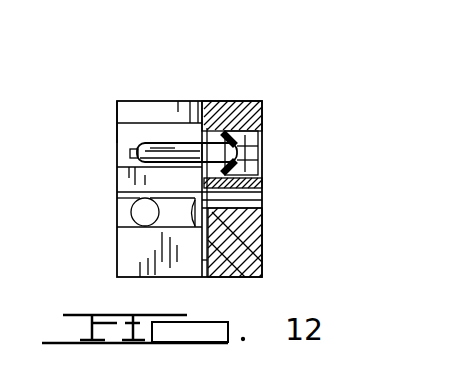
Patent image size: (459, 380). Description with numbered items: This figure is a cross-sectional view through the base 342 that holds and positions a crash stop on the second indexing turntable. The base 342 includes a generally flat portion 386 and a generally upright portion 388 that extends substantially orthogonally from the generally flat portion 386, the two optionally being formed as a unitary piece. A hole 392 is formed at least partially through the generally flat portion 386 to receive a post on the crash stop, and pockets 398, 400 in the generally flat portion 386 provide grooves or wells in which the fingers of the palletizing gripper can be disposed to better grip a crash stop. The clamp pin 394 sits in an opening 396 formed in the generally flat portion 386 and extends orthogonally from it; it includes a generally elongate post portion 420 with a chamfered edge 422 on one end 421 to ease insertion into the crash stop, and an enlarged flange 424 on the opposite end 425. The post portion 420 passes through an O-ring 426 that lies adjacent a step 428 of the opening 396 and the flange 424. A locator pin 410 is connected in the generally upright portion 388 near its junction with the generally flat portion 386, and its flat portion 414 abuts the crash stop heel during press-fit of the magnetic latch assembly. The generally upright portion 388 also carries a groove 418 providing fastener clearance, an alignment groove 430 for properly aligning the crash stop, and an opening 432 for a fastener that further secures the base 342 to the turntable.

The base 342 is at (252, 100).
The generally flat portion 386 is at (189, 128).
The generally upright portion 388 is at (127, 110).
The hole 392 is at (263, 200).
The clamp pin 394 is at (158, 146).
The opening 396 is at (262, 130).
The pocket 398 is at (203, 118).
The pocket 400 is at (207, 258).
The locator pin 410 is at (263, 260).
The flat portion 414 is at (193, 196).
The groove 418 is at (117, 118).
The post portion 420 is at (263, 238).
The end 421 is at (140, 158).
The chamfered edge 422 is at (133, 138).
The enlarged flange 424 is at (260, 157).
The opposite end 425 is at (262, 145).
The O-ring 426 is at (258, 112).
The step 428 is at (260, 170).
The alignment groove 430 is at (130, 212).
The opening 432 is at (146, 220).